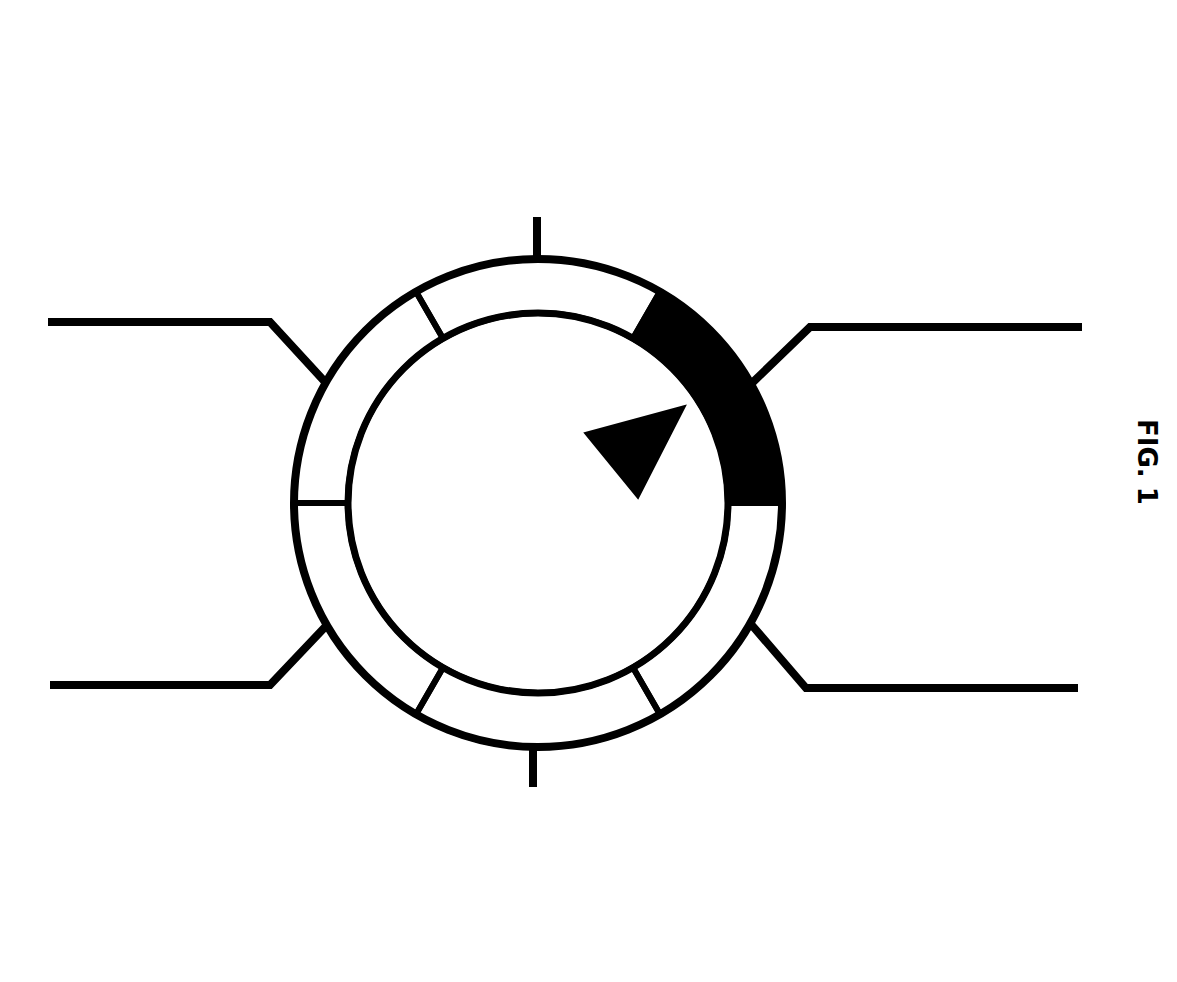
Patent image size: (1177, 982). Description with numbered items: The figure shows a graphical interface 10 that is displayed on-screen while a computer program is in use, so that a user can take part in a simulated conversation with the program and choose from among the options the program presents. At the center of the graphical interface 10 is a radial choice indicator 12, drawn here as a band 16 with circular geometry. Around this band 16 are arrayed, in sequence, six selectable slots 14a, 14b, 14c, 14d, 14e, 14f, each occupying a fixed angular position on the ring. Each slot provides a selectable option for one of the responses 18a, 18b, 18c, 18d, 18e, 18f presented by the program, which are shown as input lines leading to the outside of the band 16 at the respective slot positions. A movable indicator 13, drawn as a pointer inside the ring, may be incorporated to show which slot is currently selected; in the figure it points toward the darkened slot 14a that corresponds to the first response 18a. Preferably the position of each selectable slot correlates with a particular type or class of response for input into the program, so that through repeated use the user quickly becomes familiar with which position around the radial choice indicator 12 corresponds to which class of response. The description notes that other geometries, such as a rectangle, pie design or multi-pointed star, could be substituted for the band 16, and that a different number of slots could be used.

The graphical interface 10 is at (565, 468).
The radial choice indicator 12 is at (447, 270).
The movable indicator 13 is at (600, 453).
The selectable slot 14a is at (775, 432).
The selectable slot 14b is at (763, 552).
The selectable slot 14c is at (578, 732).
The selectable slot 14d is at (328, 587).
The selectable slot 14e is at (317, 435).
The selectable slot 14f is at (478, 282).
The band 16 is at (438, 732).
The response 18a is at (975, 292).
The response 18b is at (980, 652).
The response 18c is at (553, 820).
The response 18d is at (113, 647).
The response 18e is at (135, 292).
The response 18f is at (555, 185).